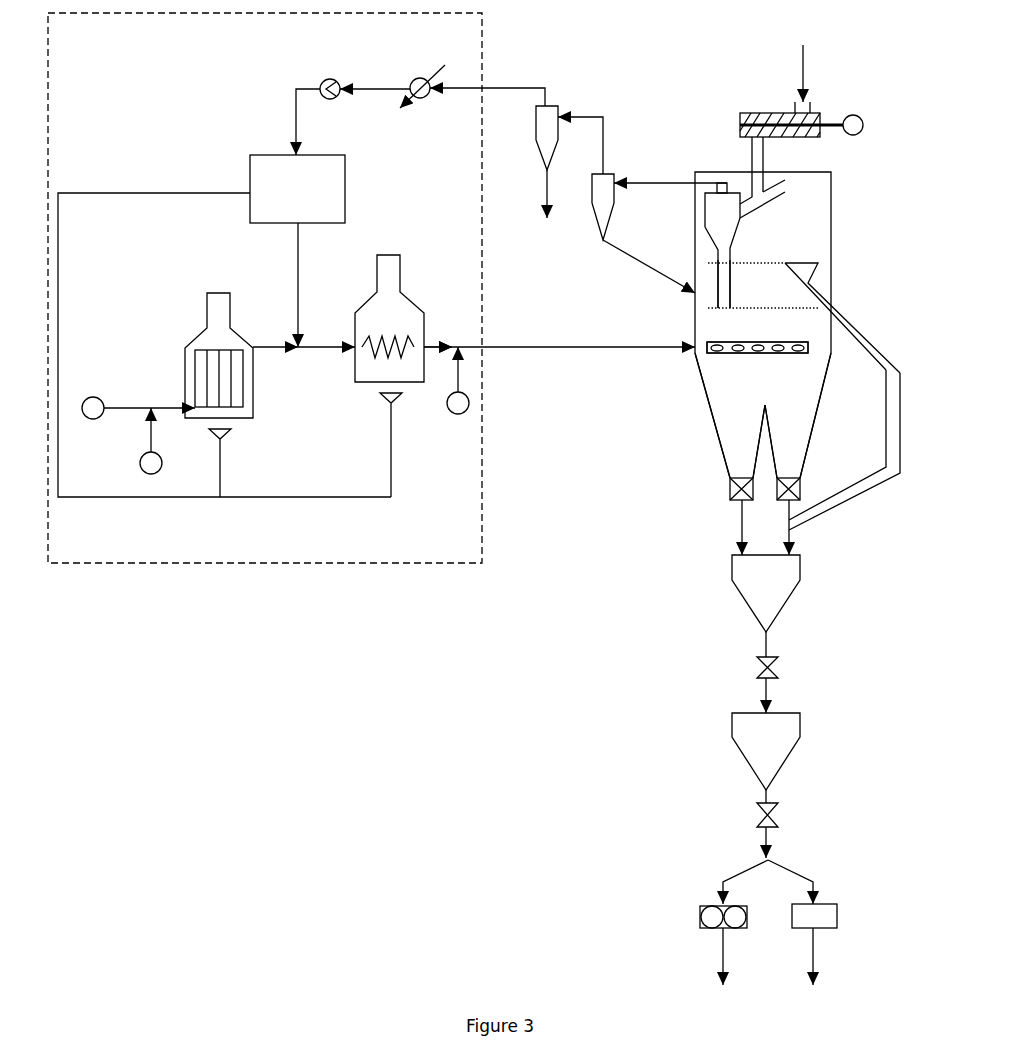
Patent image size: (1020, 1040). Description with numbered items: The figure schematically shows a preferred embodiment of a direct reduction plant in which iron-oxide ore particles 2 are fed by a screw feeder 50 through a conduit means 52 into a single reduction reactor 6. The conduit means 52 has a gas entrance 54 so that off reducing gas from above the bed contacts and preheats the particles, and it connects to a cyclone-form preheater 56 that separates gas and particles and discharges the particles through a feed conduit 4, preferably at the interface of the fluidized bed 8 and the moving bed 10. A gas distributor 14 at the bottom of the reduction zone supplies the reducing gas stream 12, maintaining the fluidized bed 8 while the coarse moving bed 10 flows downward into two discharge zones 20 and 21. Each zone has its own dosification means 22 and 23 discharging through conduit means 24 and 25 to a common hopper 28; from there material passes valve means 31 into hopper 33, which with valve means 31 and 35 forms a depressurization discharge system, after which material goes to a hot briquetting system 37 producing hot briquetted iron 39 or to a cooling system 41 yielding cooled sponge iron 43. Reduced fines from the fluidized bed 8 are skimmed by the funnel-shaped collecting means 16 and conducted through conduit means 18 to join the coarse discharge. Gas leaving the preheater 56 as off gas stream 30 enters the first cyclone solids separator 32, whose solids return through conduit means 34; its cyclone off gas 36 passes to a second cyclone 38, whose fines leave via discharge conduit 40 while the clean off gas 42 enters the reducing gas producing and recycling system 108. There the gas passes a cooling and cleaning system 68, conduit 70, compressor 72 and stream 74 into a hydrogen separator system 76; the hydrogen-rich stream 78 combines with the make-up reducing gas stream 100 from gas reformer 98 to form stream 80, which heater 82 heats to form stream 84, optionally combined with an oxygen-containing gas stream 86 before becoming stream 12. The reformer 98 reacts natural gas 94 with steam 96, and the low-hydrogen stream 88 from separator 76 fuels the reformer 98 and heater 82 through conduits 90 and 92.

The iron-oxide ore particles 2 is at (805, 58).
The feed conduit 4 is at (735, 265).
The reduction reactor 6 is at (831, 210).
The fluidized bed 8 is at (764, 285).
The moving bed 10 is at (757, 335).
The reducing gas stream 12 is at (575, 348).
The gas distributor 14 is at (720, 355).
The collecting means 16 is at (820, 265).
The conduit means 18 is at (857, 330).
The discharge zone 20 is at (730, 415).
The discharge zone 21 is at (798, 415).
The dosification means 22 is at (730, 492).
The dosification means 23 is at (800, 492).
The conduit means 24 is at (742, 520).
The conduit means 25 is at (791, 535).
The common hopper 28 is at (790, 598).
The reactor off gas stream 30 is at (650, 183).
The valve means 31 is at (778, 668).
The solids separator 32 is at (592, 210).
The hopper 33 is at (790, 755).
The conduit means 34 is at (640, 262).
The valve means 35 is at (778, 815).
The cyclone off gas 36 is at (603, 117).
The hot briquetting system 37 is at (700, 917).
The second cyclone 38 is at (536, 128).
The hot briquetted iron 39 is at (723, 950).
The discharge conduit 40 is at (547, 195).
The cooling system 41 is at (838, 915).
The clean off gas 42 is at (545, 88).
The cooled sponge iron 43 is at (815, 940).
The screw feeder 50 is at (757, 113).
The conduit means 52 is at (752, 150).
The gas entrance 54 is at (792, 195).
The preheater 56 is at (705, 200).
The cooling and cleaning system 68 is at (428, 97).
The conduit 70 is at (355, 88).
The compressor 72 is at (328, 78).
The stream 74 is at (296, 118).
The hydrogen separator system 76 is at (250, 165).
The stream 78 is at (298, 270).
The stream 80 is at (320, 350).
The heater 82 is at (390, 255).
The stream 84 is at (424, 340).
The oxygen-containing gas stream 86 is at (455, 415).
The stream 88 is at (98, 193).
The conduit 90 is at (221, 482).
The conduit 92 is at (392, 485).
The natural gas 94 is at (100, 397).
The steam 96 is at (145, 472).
The gas reformer 98 is at (207, 305).
The make-up reducing gas stream 100 is at (280, 347).
The reducing gas producing and recycling system 108 is at (322, 563).